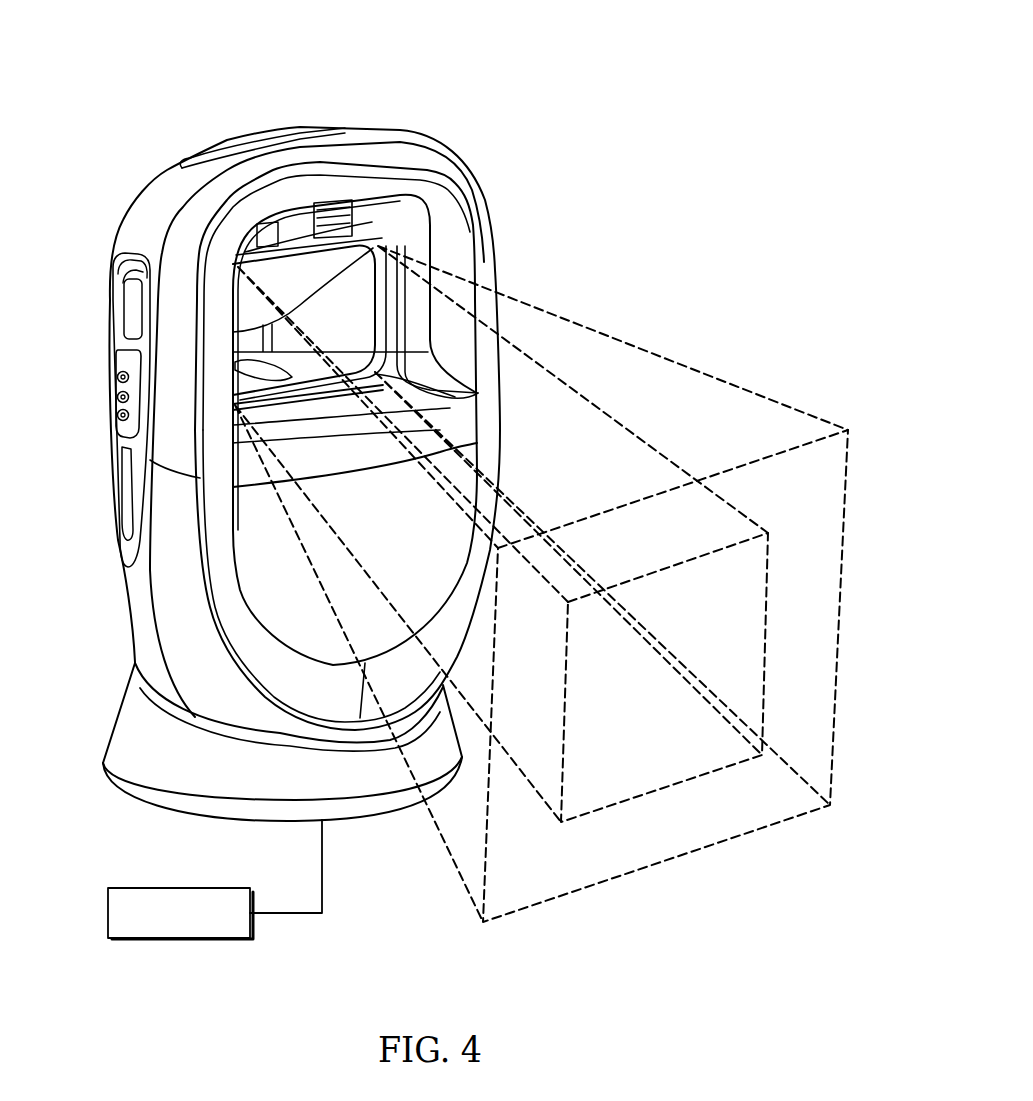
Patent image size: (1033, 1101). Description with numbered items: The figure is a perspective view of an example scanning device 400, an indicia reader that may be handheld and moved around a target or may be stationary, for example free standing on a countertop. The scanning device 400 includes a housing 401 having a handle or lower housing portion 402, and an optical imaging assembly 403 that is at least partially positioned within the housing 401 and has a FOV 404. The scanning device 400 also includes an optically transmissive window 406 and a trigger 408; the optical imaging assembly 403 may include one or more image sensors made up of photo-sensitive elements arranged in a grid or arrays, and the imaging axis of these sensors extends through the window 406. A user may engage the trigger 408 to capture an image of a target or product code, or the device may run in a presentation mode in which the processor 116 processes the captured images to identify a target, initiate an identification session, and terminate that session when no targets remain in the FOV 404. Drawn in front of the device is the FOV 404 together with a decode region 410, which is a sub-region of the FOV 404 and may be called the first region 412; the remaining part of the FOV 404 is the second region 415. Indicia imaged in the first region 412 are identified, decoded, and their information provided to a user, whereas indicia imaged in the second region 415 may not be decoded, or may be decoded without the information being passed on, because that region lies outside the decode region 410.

The scanning device 400 is at (113, 73).
The housing 401 is at (173, 627).
The lower housing portion 402 is at (182, 680).
The optical imaging assembly 403 is at (385, 348).
The FOV 404 is at (668, 356).
The optically transmissive window 406 is at (368, 230).
The trigger 408 is at (117, 397).
The decode region 410 is at (561, 822).
The first region 412 is at (587, 780).
The second region 415 is at (697, 826).
The processor 116 is at (108, 914).